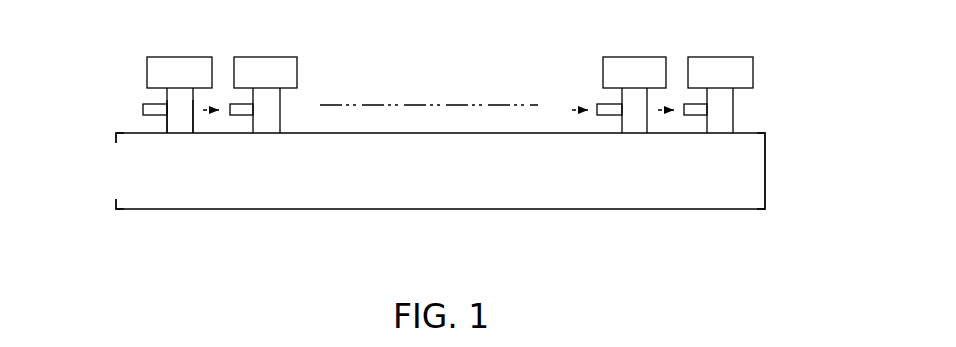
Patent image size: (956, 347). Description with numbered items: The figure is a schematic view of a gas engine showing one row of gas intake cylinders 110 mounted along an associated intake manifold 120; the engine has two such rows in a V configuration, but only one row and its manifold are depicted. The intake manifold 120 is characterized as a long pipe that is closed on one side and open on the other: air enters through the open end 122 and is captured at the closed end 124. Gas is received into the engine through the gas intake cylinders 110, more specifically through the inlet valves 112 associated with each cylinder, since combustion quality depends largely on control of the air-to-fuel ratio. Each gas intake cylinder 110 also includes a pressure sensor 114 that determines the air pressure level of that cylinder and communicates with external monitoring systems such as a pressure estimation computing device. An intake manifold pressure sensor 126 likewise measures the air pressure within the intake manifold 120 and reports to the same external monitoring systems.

The gas intake cylinders 110 is at (185, 44).
The inlet valves 112 is at (146, 99).
The pressure sensor 114 is at (179, 134).
The intake manifold 120 is at (241, 189).
The open end 122 is at (109, 171).
The closed end 124 is at (783, 171).
The intake manifold pressure sensor 126 is at (442, 188).